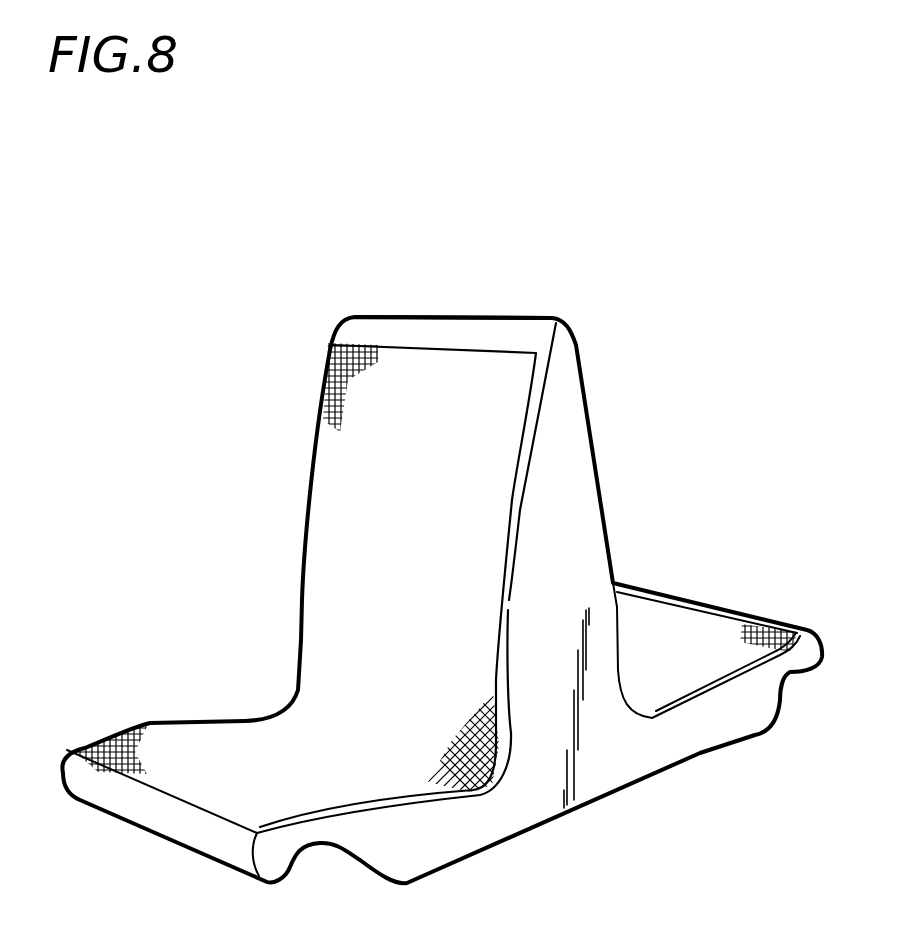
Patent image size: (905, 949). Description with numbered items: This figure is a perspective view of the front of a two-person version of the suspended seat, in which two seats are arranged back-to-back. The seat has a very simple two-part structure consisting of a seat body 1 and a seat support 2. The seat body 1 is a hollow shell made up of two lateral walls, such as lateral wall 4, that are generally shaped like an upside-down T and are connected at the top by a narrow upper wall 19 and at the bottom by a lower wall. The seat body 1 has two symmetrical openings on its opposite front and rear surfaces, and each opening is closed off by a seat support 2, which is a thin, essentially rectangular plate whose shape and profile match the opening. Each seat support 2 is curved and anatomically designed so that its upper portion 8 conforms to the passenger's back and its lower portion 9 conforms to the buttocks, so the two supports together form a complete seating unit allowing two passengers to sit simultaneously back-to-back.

The seat body 1 is at (534, 842).
The seat support 2 is at (330, 550).
The lateral wall 4 is at (628, 768).
The upper portion 8 is at (338, 468).
The lower portion 9 is at (163, 740).
The upper wall 19 is at (450, 305).